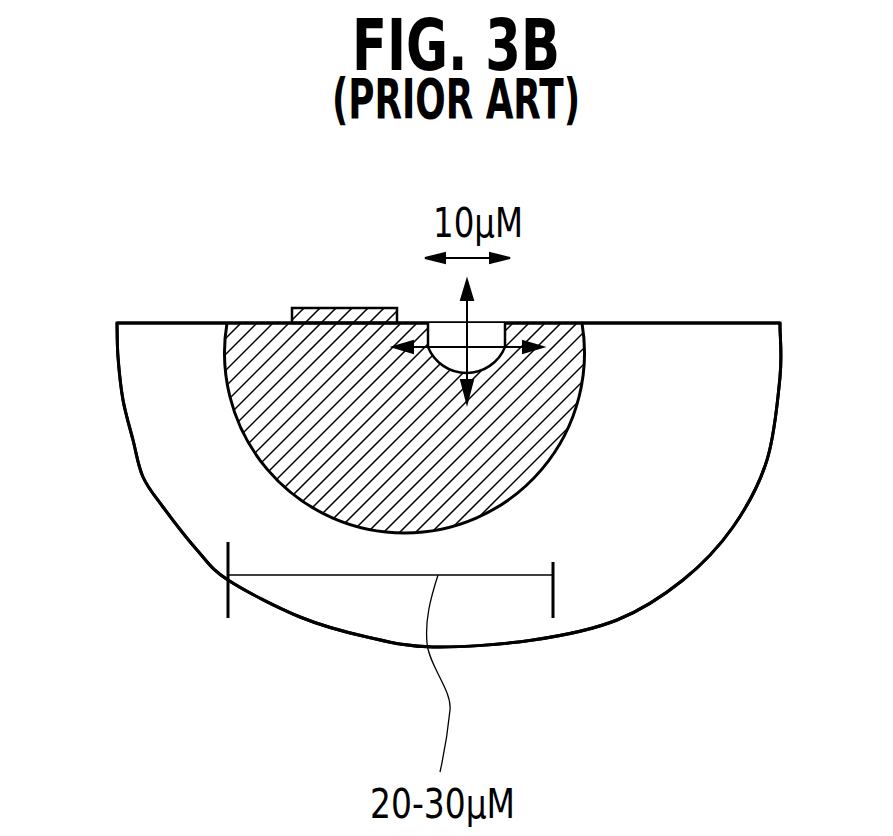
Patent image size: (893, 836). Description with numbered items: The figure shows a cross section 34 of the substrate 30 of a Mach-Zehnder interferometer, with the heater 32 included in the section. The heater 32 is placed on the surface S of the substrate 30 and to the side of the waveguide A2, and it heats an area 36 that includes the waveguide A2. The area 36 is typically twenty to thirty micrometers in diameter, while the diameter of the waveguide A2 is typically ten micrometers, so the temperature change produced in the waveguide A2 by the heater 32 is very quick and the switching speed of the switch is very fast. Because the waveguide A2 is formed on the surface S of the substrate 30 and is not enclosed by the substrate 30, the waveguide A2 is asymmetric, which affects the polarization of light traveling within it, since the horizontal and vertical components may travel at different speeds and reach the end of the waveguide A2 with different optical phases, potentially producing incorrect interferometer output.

The substrate 30 is at (733, 467).
The heater 32 is at (320, 307).
The cross section 34 is at (168, 593).
The area 36 is at (437, 485).
The surface S is at (653, 323).
The waveguide A2 is at (505, 327).